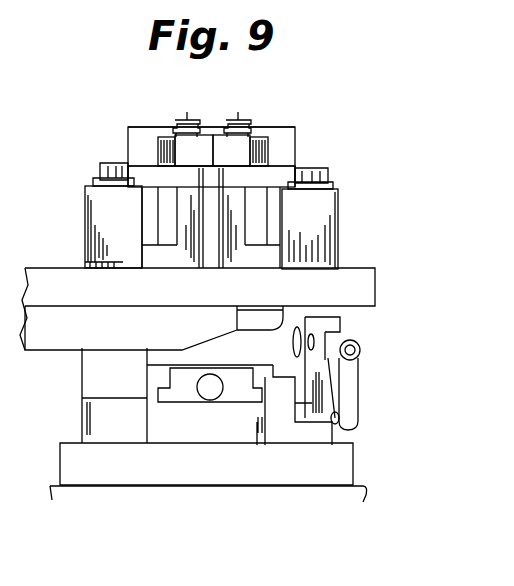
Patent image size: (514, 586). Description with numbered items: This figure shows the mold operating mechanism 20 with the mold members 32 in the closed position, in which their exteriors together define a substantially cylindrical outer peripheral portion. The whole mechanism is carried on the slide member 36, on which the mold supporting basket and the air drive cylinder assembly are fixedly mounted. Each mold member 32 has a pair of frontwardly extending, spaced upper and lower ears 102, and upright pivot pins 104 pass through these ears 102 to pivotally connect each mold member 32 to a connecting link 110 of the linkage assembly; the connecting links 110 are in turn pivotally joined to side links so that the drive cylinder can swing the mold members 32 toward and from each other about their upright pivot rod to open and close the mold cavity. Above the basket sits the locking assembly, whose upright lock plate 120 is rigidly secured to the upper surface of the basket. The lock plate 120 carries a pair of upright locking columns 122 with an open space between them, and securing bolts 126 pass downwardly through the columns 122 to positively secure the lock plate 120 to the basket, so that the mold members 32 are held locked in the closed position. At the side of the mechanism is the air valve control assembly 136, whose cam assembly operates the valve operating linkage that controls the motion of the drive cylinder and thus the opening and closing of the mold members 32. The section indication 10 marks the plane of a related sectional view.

The mold operating mechanism 20 is at (273, 122).
The mold members 32 is at (143, 127).
The ears 102 is at (222, 150).
The pivot pins 104 is at (263, 93).
The securing bolts 126 is at (100, 172).
The locking columns 122 is at (97, 218).
The connecting link 110 is at (229, 243).
The lock plate 120 is at (116, 270).
The slide member 36 is at (60, 463).
The air valve control assembly 136 is at (391, 337).
The section line 10 is at (348, 112).